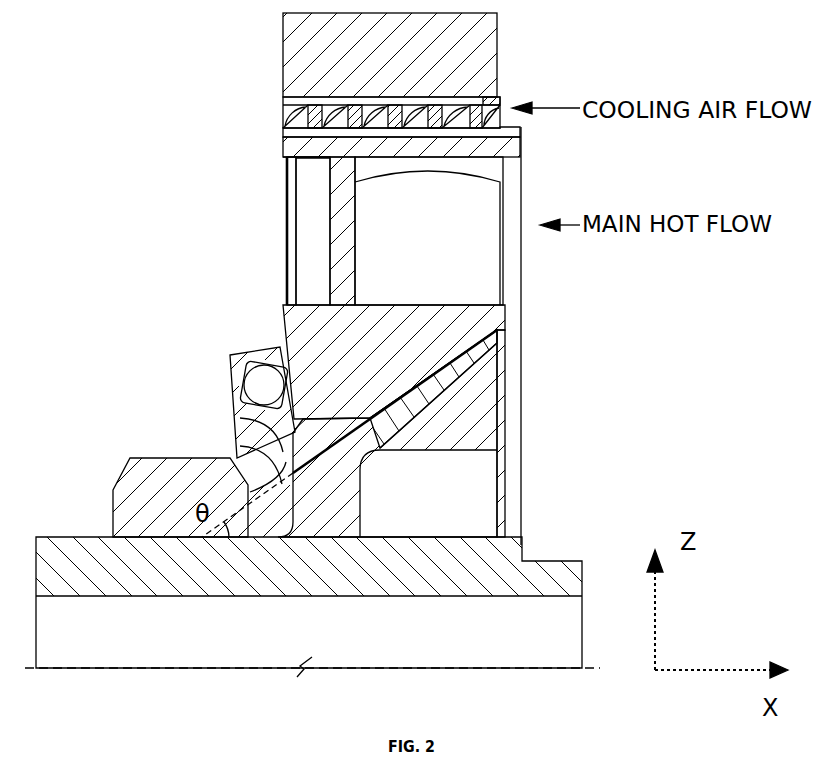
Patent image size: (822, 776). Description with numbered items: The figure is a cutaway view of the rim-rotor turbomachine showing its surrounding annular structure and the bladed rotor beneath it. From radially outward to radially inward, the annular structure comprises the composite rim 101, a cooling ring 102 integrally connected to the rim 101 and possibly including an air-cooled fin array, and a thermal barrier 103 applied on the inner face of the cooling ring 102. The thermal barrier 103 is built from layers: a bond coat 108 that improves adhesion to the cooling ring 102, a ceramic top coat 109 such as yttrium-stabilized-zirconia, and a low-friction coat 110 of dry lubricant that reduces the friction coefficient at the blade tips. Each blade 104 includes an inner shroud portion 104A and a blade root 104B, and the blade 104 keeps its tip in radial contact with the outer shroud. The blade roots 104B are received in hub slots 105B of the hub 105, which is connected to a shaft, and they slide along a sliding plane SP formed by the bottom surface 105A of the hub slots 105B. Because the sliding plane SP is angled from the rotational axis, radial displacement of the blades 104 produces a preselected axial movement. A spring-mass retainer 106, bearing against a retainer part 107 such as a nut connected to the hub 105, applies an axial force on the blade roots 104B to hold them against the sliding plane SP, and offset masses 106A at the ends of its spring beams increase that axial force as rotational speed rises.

The rim 101 is at (296, 43).
The cooling ring 102 is at (302, 117).
The bond coat 108 is at (268, 128).
The thermal barrier 103 is at (256, 147).
The top coat 109 is at (309, 147).
The low-friction coat 110 is at (296, 164).
The blade 104 is at (309, 230).
The inner shroud portion 104A is at (294, 302).
The blade root 104B is at (378, 362).
The hub 105 is at (327, 490).
The bottom surface 105A is at (408, 413).
The hub slot 105B is at (315, 437).
The spring-mass retainer 106 is at (268, 516).
The offset mass 106A is at (262, 385).
The retainer part 107 is at (105, 458).
The sliding plane SP is at (456, 373).